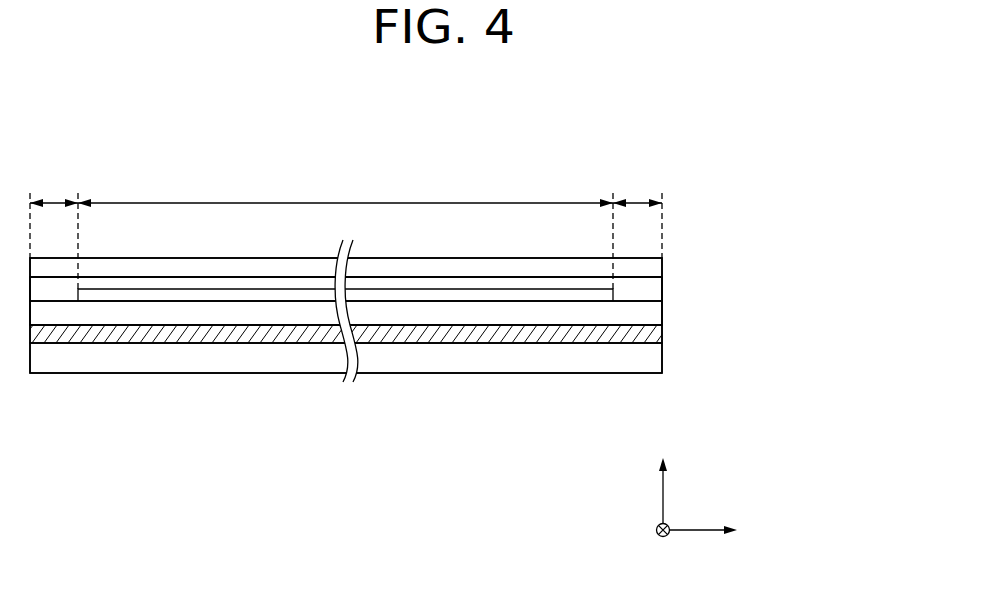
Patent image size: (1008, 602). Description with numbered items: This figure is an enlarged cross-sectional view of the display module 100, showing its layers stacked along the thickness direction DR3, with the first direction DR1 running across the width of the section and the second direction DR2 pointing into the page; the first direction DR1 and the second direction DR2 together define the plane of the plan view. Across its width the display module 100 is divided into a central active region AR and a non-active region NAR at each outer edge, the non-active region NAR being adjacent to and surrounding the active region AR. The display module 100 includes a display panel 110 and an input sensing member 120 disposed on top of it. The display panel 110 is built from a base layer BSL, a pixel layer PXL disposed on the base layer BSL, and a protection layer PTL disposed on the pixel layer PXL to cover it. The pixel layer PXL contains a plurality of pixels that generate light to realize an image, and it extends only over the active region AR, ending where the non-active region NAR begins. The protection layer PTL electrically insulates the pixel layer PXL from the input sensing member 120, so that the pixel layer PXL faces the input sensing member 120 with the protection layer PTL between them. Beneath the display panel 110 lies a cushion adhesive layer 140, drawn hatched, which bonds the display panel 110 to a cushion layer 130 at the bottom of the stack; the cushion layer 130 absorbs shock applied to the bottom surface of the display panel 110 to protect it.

The display module 100 is at (830, 222).
The display panel 110 is at (428, 300).
The input sensing member 120 is at (648, 263).
The cushion layer 130 is at (648, 355).
The cushion adhesive layer 140 is at (648, 333).
The protection layer PTL is at (652, 286).
The pixel layer PXL is at (605, 294).
The base layer BSL is at (653, 313).
The non-active region NAR is at (346, 187).
The active region AR is at (345, 188).
The first direction DR1 is at (724, 529).
The second direction DR2 is at (663, 550).
The third direction DR3 is at (663, 476).